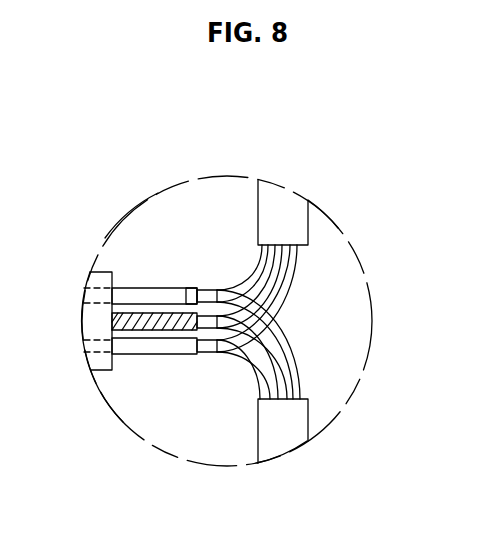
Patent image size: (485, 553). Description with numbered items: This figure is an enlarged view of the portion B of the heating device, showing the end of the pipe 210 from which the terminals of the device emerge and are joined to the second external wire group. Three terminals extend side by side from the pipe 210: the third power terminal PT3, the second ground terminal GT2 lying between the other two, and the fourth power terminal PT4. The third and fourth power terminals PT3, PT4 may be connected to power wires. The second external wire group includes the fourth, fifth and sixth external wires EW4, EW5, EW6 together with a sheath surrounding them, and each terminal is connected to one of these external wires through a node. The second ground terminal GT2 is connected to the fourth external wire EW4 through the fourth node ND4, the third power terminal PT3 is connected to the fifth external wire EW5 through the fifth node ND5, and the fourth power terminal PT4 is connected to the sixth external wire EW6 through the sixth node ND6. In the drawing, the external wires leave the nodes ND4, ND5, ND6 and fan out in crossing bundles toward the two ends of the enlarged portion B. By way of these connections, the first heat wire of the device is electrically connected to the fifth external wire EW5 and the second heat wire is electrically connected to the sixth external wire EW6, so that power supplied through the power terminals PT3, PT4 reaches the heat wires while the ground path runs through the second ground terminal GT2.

The pipe 210 is at (107, 272).
The third power terminal PT3 is at (147, 288).
The fourth power terminal PT4 is at (130, 354).
The second ground terminal GT2 is at (172, 313).
The fourth node ND4 is at (193, 288).
The fifth node ND5 is at (210, 290).
The sixth node ND6 is at (212, 352).
The fourth external wire EW4 is at (262, 302).
The fifth external wire EW5 is at (295, 255).
The sixth external wire EW6 is at (272, 328).
The portion B is at (343, 407).